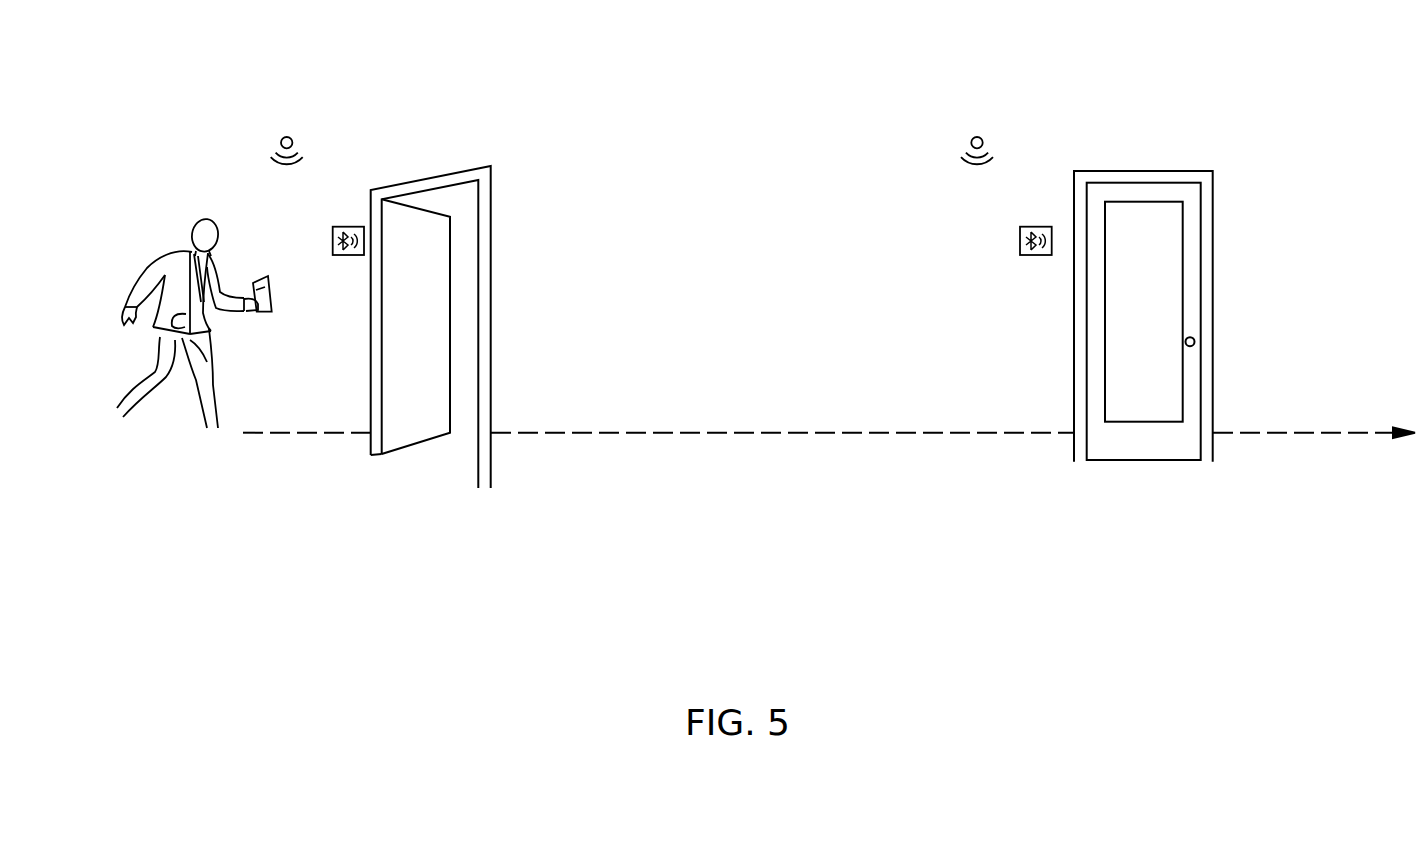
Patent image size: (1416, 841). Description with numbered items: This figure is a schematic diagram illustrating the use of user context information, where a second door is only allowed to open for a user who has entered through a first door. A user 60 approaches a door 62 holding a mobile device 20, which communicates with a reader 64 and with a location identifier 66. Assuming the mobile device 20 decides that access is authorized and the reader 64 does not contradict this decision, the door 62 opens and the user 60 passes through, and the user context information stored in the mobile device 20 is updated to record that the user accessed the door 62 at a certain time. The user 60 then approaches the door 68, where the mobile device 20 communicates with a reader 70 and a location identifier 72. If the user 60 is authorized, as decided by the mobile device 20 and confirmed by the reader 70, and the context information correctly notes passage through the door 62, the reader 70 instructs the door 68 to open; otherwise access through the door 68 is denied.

The user 60 is at (144, 229).
The mobile device 20 is at (267, 313).
The door 62 is at (491, 256).
The reader 64 is at (348, 227).
The location identifier 66 is at (281, 143).
The door 68 is at (1213, 227).
The reader 70 is at (1038, 227).
The location identifier 72 is at (971, 143).